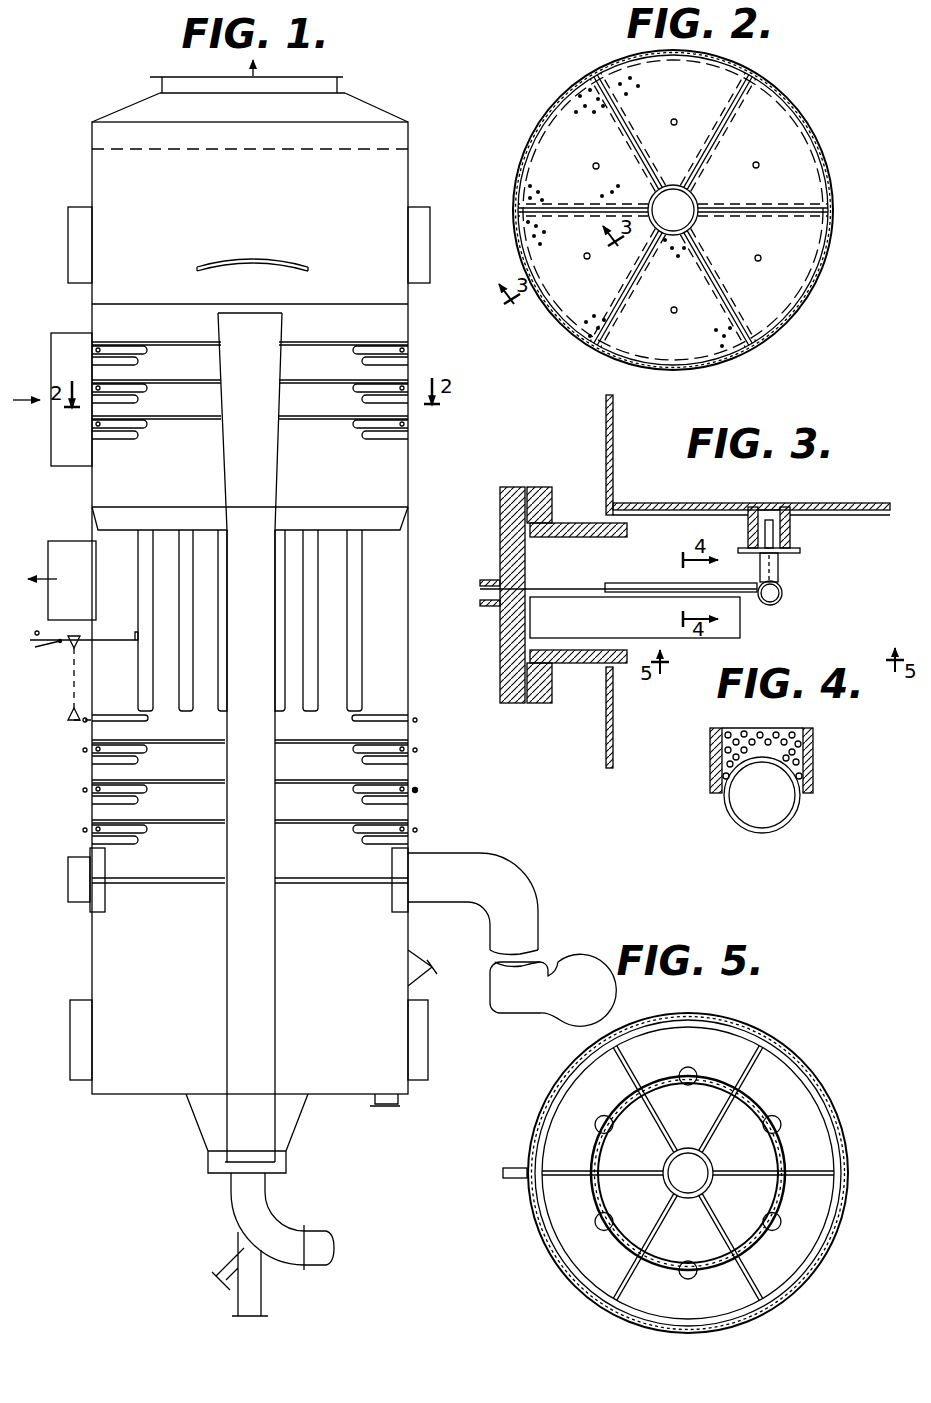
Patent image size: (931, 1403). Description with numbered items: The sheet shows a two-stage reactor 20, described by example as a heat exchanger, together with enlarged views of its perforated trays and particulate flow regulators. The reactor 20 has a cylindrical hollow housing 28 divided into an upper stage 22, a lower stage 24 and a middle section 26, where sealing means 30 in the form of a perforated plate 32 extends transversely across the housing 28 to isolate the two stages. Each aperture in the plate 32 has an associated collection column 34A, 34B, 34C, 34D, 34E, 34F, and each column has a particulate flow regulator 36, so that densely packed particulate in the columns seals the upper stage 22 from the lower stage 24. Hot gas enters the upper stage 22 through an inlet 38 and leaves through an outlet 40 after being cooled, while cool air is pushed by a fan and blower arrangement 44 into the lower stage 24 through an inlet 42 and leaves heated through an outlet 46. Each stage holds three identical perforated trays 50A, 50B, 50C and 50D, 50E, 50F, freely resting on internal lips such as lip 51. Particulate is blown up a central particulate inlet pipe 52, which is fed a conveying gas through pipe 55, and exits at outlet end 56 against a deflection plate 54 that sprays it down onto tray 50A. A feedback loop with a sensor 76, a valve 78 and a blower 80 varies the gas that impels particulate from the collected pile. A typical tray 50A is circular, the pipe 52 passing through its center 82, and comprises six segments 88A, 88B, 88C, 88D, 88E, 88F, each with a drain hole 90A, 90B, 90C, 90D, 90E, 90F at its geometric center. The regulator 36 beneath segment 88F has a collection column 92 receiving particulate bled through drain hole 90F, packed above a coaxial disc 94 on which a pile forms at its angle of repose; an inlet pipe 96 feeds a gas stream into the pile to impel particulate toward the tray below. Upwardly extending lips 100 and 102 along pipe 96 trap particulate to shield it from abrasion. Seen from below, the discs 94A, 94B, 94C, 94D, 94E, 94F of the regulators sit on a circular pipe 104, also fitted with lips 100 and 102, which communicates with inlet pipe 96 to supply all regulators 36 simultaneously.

In FIG. 1, the two-stage reactor 20 is at (428, 180).
In FIG. 1, the upper section or stage 22 is at (411, 470).
In FIG. 3, the upper section or stage 22 is at (606, 458).
In FIG. 1, the lower section or stage 24 is at (411, 773).
In FIG. 1, the middle section 26 is at (411, 678).
In FIG. 1, the cylindrical hollow housing 28 is at (90, 182).
In FIG. 1, the sealing means 30 is at (368, 567).
In FIG. 1, the perforated plate 32 is at (402, 522).
In FIG. 1, the collection column 34A is at (140, 545).
In FIG. 1, the collection column 34B is at (193, 668).
In FIG. 1, the collection column 34C is at (221, 629).
In FIG. 1, the collection column 34D is at (283, 598).
In FIG. 1, the collection column 34E is at (310, 708).
In FIG. 1, the collection column 34F is at (360, 628).
In FIG. 1, the particulate flow regulator 36 is at (148, 352).
In FIG. 3, the particulate flow regulator 36 is at (782, 572).
In FIG. 1, the gas inlet 38 is at (50, 449).
In FIG. 1, the gas outlet 40 is at (326, 73).
In FIG. 1, the cool gas inlet 42 is at (418, 853).
In FIG. 1, the fan and blower arrangement 44 is at (566, 958).
In FIG. 1, the gas outlet 46 is at (48, 557).
In FIG. 1, the perforated tray 50A is at (318, 334).
In FIG. 2, the perforated tray 50A is at (812, 108).
In FIG. 1, the perforated tray 50B is at (338, 383).
In FIG. 1, the perforated tray 50C is at (298, 420).
In FIG. 1, the perforated tray 50D is at (312, 744).
In FIG. 1, the perforated tray 50E is at (312, 784).
In FIG. 1, the perforated tray 50F is at (320, 824).
In FIG. 3, the lip 51 is at (614, 503).
In FIG. 1, the particulate inlet pipe 52 is at (277, 950).
In FIG. 1, the deflection plate 54 is at (252, 263).
In FIG. 1, the pipe 55 is at (284, 1208).
In FIG. 1, the outlet end 56 is at (256, 313).
In FIG. 1, the sensor means 76 is at (136, 640).
In FIG. 1, the valve 78 is at (68, 646).
In FIG. 1, the blower 80 is at (66, 719).
In FIG. 2, the center 82 is at (694, 203).
In FIG. 5, the center 82 is at (710, 1160).
In FIG. 2, the segment 88A is at (548, 105).
In FIG. 2, the segment 88B is at (752, 58).
In FIG. 2, the segment 88C is at (820, 155).
In FIG. 2, the segment 88D is at (802, 302).
In FIG. 2, the segment 88E is at (700, 368).
In FIG. 2, the segment 88F is at (552, 318).
In FIG. 3, the segment 88F is at (844, 503).
In FIG. 2, the drain hole 90A is at (594, 164).
In FIG. 2, the drain hole 90B is at (674, 119).
In FIG. 2, the drain hole 90C is at (756, 162).
In FIG. 2, the drain hole 90D is at (760, 261).
In FIG. 2, the drain hole 90E is at (674, 307).
In FIG. 2, the drain hole 90F is at (584, 259).
In FIG. 3, the drain hole 90F is at (770, 503).
In FIG. 3, the collection column 92 is at (791, 528).
In FIG. 3, the disc 94 is at (801, 551).
In FIG. 5, the disc 94A is at (596, 1128).
In FIG. 5, the disc 94B is at (686, 1068).
In FIG. 5, the disc 94C is at (780, 1126).
In FIG. 5, the disc 94D is at (780, 1222).
In FIG. 5, the disc 94E is at (688, 1279).
In FIG. 5, the disc 94F is at (596, 1226).
In FIG. 3, the inlet pipe 96 is at (750, 598).
In FIG. 4, the inlet pipe 96 is at (790, 824).
In FIG. 5, the inlet pipe 96 is at (566, 1176).
In FIG. 4, the upwardly extending lip 100 is at (710, 740).
In FIG. 5, the upwardly extending lip 100 is at (626, 1100).
In FIG. 4, the upwardly extending lip 102 is at (814, 740).
In FIG. 5, the upwardly extending lip 102 is at (634, 1120).
In FIG. 5, the circular pipe 104 is at (756, 1116).